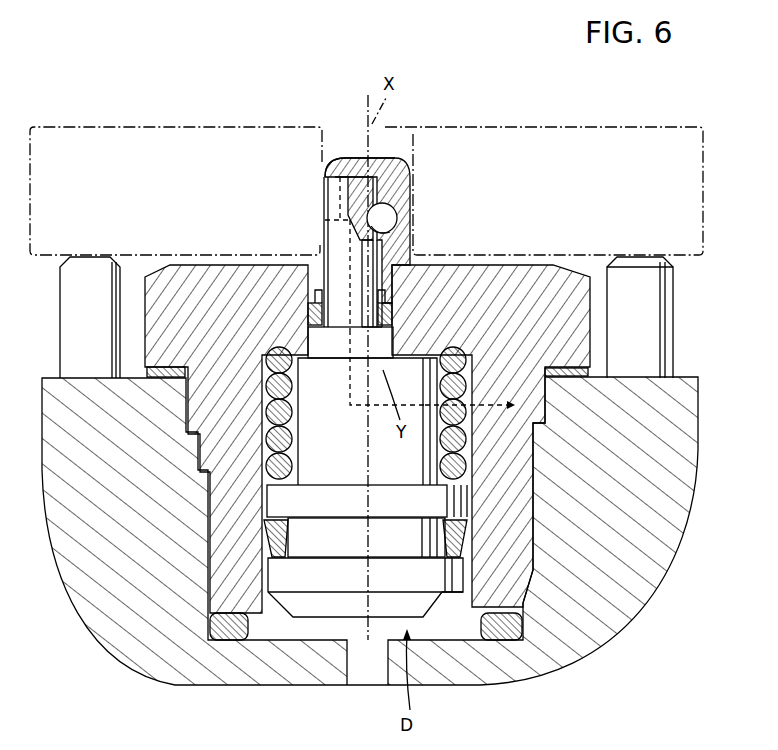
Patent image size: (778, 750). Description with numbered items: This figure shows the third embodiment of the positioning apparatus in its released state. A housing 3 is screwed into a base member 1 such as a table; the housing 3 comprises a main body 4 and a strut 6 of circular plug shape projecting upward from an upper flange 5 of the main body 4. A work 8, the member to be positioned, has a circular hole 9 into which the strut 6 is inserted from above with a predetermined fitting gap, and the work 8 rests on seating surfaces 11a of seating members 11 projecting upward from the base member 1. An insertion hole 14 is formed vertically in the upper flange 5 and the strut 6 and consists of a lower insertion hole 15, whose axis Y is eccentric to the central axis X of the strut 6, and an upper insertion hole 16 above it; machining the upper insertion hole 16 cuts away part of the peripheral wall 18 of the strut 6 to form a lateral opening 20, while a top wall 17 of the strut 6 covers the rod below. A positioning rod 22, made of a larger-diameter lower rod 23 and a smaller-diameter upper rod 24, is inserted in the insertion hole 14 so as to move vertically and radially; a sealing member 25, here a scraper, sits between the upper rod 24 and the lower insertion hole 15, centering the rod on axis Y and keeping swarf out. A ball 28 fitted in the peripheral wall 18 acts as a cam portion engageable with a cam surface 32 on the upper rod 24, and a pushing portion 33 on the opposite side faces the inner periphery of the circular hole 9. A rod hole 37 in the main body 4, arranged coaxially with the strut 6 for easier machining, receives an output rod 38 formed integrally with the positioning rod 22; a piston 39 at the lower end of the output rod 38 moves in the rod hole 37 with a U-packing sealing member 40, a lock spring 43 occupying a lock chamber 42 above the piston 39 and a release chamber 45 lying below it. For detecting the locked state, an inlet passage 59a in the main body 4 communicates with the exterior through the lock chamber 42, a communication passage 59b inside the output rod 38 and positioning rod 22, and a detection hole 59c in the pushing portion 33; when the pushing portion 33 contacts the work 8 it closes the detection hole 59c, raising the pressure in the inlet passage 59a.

The base member 1 is at (647, 605).
The housing 3 is at (594, 333).
The main body 4 is at (480, 612).
The upper flange 5 is at (586, 297).
The strut 6 is at (416, 193).
The work 8 is at (137, 127).
The circular hole 9 is at (328, 135).
The seating member 11 is at (674, 313).
The seating surface 11a is at (638, 256).
The insertion hole 14 is at (318, 360).
The lower insertion hole 15 is at (308, 342).
The upper insertion hole 16 is at (327, 248).
The top wall 17 is at (330, 162).
The peripheral wall 18 is at (408, 228).
The opening 20 is at (328, 178).
The positioning rod 22 is at (316, 210).
The lower rod 23 is at (368, 350).
The upper rod 24 is at (325, 238).
The sealing member 25 is at (325, 312).
The ball 28 is at (397, 216).
The cam surface 32 is at (373, 146).
The pushing portion 33 is at (330, 200).
The rod hole 37 is at (275, 493).
The output rod 38 is at (333, 630).
The piston 39 is at (402, 508).
The sealing member 40 is at (285, 545).
The lock chamber 42 is at (298, 428).
The lock spring 43 is at (293, 465).
The release chamber 45 is at (288, 637).
The inlet passage 59a is at (520, 418).
The communication passage 59b is at (365, 407).
The detection hole 59c is at (350, 157).